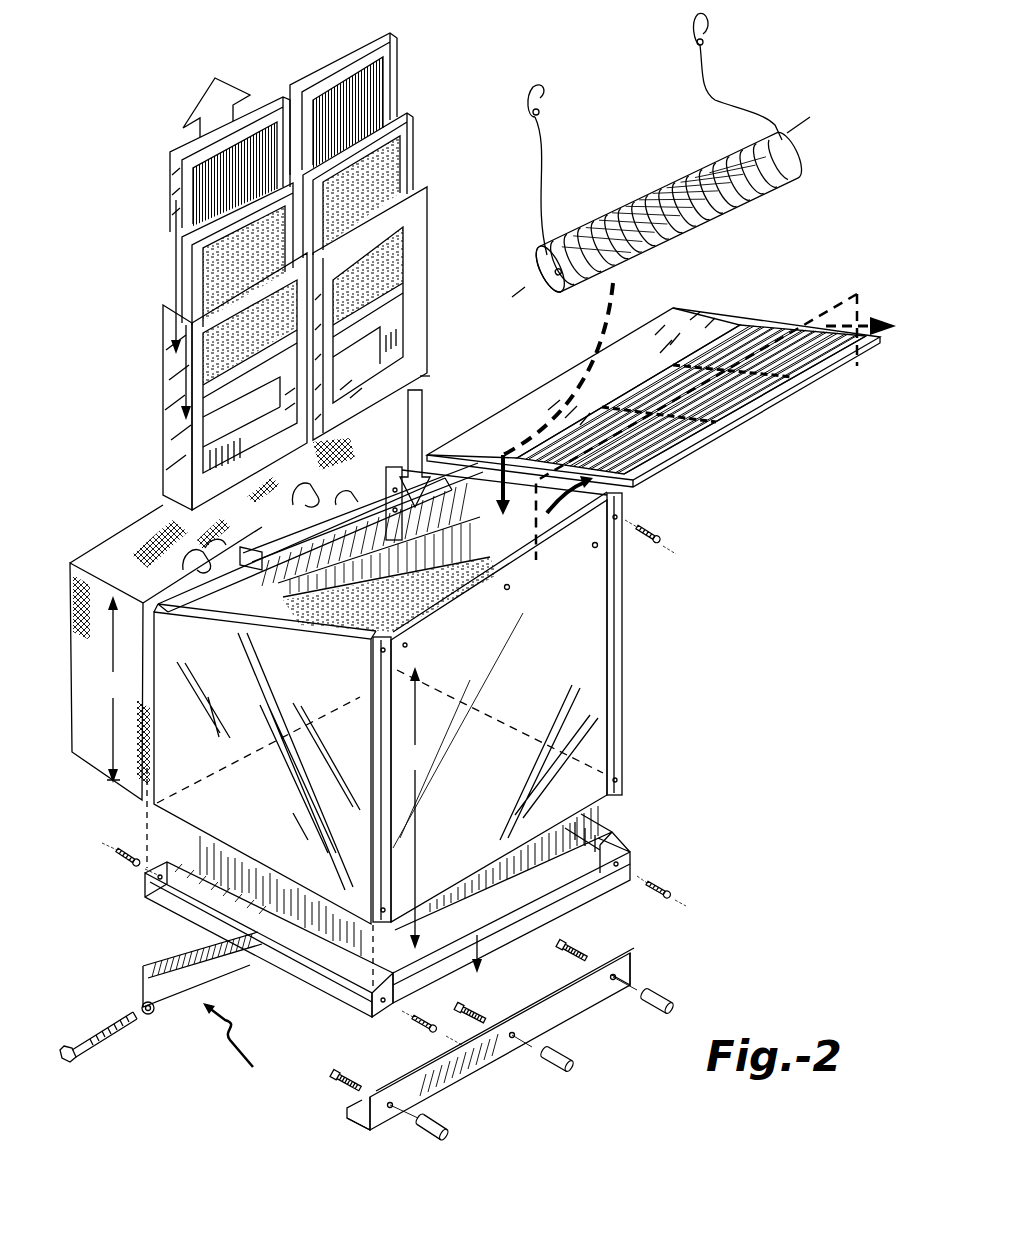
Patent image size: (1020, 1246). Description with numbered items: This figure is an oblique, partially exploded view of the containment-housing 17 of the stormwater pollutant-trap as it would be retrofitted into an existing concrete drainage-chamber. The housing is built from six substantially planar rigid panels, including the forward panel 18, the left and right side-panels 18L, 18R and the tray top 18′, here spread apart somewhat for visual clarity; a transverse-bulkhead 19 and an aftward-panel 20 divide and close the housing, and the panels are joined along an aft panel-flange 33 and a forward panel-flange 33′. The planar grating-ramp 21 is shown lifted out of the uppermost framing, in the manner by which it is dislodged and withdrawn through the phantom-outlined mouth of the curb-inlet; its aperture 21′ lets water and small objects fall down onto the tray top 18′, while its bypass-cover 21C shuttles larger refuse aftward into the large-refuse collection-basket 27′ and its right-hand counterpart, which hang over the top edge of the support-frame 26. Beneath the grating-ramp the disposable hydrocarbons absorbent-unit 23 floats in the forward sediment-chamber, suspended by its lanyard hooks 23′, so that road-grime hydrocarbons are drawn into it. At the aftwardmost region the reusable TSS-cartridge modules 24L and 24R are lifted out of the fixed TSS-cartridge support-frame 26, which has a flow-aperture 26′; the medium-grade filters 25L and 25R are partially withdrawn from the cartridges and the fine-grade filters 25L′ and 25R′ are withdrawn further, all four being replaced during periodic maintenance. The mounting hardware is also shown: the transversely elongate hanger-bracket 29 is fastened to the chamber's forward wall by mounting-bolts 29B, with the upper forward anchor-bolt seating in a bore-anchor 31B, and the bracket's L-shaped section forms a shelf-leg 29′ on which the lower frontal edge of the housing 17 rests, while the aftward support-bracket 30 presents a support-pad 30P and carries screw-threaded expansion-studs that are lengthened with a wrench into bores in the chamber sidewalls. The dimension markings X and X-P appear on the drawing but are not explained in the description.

The containment-housing 17 is at (690, 572).
The forward panel 18 is at (553, 654).
The tray top 18′ is at (362, 957).
The left side-panel 18L is at (437, 460).
The right side-panel 18R is at (212, 789).
The transverse-bulkhead 19 is at (267, 635).
The aftward-panel 20 is at (237, 620).
The grating-ramp 21 is at (736, 288).
The aperture 21′ is at (217, 540).
The bypass-cover 21C is at (497, 450).
The disposable hydrocarbons absorbent-unit 23 is at (653, 316).
The mooring-tie 23′ is at (700, 87).
The left TSS-cartridge 24L is at (424, 232).
The right TSS-cartridge 24R is at (160, 388).
The left medium-grade TSS-filter 25L is at (408, 177).
The left fine-grade TSS-filter 25L′ is at (363, 92).
The right medium-grade TSS-filter 25R is at (190, 305).
The right fine-grade TSS-filter 25R′ is at (213, 187).
The fixed TSS-cartridge support-frame 26 is at (297, 550).
The flow-aperture 26′ is at (215, 428).
The left large-refuse collection-basket 27′ is at (433, 387).
The hanger-bracket 29 is at (527, 1010).
The shelf-leg 29′ is at (353, 1103).
The mounting-bolts 29B is at (587, 947).
The support-bracket 30 is at (238, 1046).
The support-pad 30P is at (213, 967).
The bore-anchor 31B is at (653, 1013).
The aft panel-flange 33 is at (183, 577).
The forward panel-flange 33′ is at (613, 650).
The panel height dimension X is at (416, 808).
The wall height dimension X-P is at (109, 689).